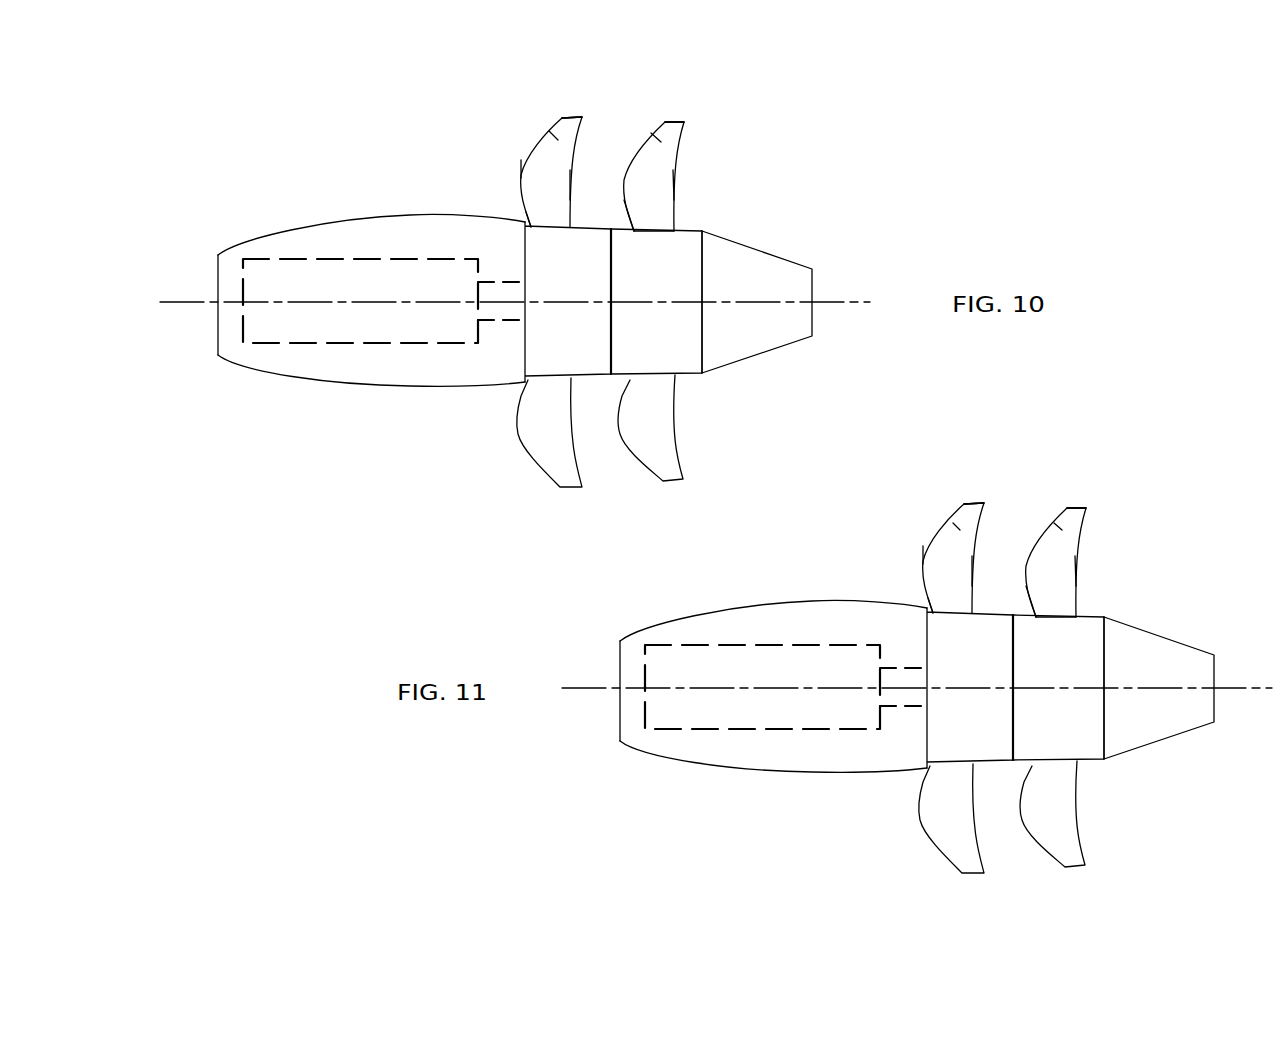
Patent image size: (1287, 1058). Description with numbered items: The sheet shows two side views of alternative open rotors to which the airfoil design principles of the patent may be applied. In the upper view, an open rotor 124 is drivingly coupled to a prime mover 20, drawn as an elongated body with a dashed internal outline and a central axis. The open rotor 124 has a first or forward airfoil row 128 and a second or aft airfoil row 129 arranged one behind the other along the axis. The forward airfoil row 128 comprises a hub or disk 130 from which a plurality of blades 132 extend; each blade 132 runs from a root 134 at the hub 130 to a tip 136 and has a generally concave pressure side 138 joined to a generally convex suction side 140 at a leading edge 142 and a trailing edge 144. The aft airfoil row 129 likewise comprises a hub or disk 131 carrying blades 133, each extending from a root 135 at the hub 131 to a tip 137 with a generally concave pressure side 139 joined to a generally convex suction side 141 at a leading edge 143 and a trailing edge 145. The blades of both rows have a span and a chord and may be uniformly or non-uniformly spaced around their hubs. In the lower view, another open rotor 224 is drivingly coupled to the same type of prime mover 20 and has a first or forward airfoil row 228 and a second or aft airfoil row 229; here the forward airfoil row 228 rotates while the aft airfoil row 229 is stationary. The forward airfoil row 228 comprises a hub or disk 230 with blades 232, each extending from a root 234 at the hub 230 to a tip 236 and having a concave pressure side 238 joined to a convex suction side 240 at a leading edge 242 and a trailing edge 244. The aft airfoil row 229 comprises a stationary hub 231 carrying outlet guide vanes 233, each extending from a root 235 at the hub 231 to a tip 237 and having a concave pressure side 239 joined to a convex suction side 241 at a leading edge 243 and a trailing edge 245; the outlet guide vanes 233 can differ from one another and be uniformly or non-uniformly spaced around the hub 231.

In FIG. 10, the prime mover 20 is at (284, 349).
In FIG. 11, the prime mover 20 is at (773, 701).
In FIG. 10, the open rotor 124 is at (728, 182).
In FIG. 10, the forward airfoil row 128 is at (597, 492).
In FIG. 10, the aft airfoil row 129 is at (700, 492).
In FIG. 10, the hub 130 is at (581, 292).
In FIG. 10, the hub 131 is at (676, 292).
In FIG. 10, the blade 132 is at (578, 110).
In FIG. 10, the blade 133 is at (680, 110).
In FIG. 10, the root 134 is at (541, 226).
In FIG. 10, the root 135 is at (653, 229).
In FIG. 10, the tip 136 is at (570, 116).
In FIG. 10, the tip 137 is at (684, 120).
In FIG. 10, the pressure side 138 is at (564, 188).
In FIG. 10, the pressure side 139 is at (666, 200).
In FIG. 10, the suction side 140 is at (548, 130).
In FIG. 10, the suction side 141 is at (650, 132).
In FIG. 10, the leading edge 142 is at (523, 166).
In FIG. 10, the leading edge 143 is at (627, 209).
In FIG. 10, the trailing edge 144 is at (592, 177).
In FIG. 10, the trailing edge 145 is at (696, 177).
In FIG. 11, the open rotor 224 is at (1159, 648).
In FIG. 11, the forward airfoil row 228 is at (965, 846).
In FIG. 11, the aft airfoil row 229 is at (1067, 844).
In FIG. 11, the hub 230 is at (970, 688).
In FIG. 11, the stationary hub 231 is at (1113, 687).
In FIG. 11, the blade 232 is at (1001, 482).
In FIG. 11, the outlet guide vane 233 is at (1103, 484).
In FIG. 11, the root 234 is at (906, 591).
In FIG. 11, the root 235 is at (1088, 600).
In FIG. 11, the tip 236 is at (945, 484).
In FIG. 11, the tip 237 is at (1112, 508).
In FIG. 11, the pressure side 238 is at (953, 558).
In FIG. 11, the pressure side 239 is at (1056, 562).
In FIG. 11, the suction side 240 is at (929, 520).
In FIG. 11, the suction side 241 is at (1031, 520).
In FIG. 11, the leading edge 242 is at (898, 549).
In FIG. 11, the leading edge 243 is at (1009, 597).
In FIG. 11, the trailing edge 244 is at (992, 560).
In FIG. 11, the trailing edge 245 is at (1095, 560).